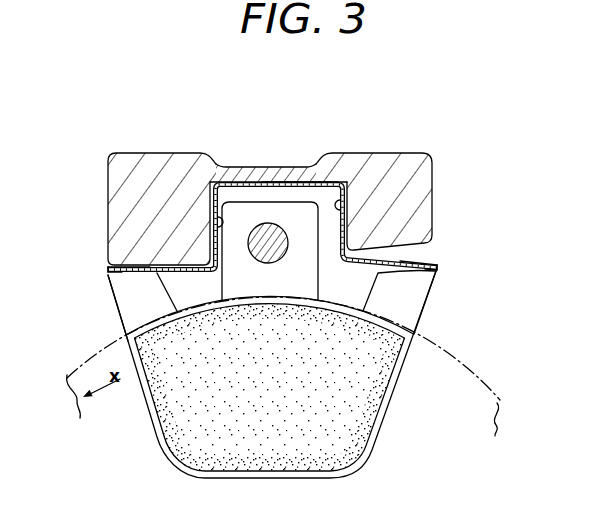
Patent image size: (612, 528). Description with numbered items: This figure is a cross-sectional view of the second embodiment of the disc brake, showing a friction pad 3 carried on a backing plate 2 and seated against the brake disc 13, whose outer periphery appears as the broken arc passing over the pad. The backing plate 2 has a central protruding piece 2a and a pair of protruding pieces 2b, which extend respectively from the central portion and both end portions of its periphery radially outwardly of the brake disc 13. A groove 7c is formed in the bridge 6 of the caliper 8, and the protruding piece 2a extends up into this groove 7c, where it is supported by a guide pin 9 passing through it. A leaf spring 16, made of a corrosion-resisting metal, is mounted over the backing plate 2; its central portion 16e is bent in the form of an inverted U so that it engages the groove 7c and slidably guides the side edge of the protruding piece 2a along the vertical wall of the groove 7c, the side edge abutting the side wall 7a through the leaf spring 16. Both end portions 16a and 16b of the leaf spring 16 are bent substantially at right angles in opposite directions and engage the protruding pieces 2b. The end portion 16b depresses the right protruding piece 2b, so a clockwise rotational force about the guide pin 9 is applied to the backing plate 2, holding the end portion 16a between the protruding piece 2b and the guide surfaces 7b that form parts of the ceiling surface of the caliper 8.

The backing plate 2 is at (397, 387).
The protruding piece 2a is at (278, 155).
The protruding pieces 2b is at (119, 311).
The friction pad 3 is at (290, 409).
The bridge 6 is at (405, 165).
The side wall 7a is at (220, 222).
The guide surfaces 7b is at (130, 273).
The groove 7c is at (342, 198).
The caliper 8 is at (153, 152).
The guide pin 9 is at (272, 230).
The brake disc 13 is at (475, 380).
The leaf spring 16 is at (254, 170).
The end portion 16a is at (147, 268).
The end portion 16b is at (418, 264).
The central portion 16e is at (303, 180).